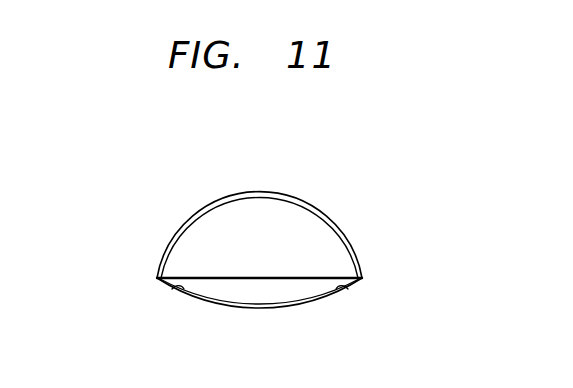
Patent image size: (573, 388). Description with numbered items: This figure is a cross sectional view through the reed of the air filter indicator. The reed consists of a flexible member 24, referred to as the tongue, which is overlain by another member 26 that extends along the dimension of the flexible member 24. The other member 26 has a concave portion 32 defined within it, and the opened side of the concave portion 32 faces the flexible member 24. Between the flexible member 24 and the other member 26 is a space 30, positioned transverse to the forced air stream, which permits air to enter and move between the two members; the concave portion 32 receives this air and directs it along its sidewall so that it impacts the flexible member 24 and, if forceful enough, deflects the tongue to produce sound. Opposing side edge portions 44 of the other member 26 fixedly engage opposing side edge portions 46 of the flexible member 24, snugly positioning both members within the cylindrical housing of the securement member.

The flexible member 24 is at (255, 303).
The other member 26 is at (339, 230).
The space 30 is at (228, 283).
The concave portion 32 is at (260, 218).
The opposing side edge portions of other member 44 is at (158, 279).
The opposing side edge portions of flexible member 46 is at (162, 289).